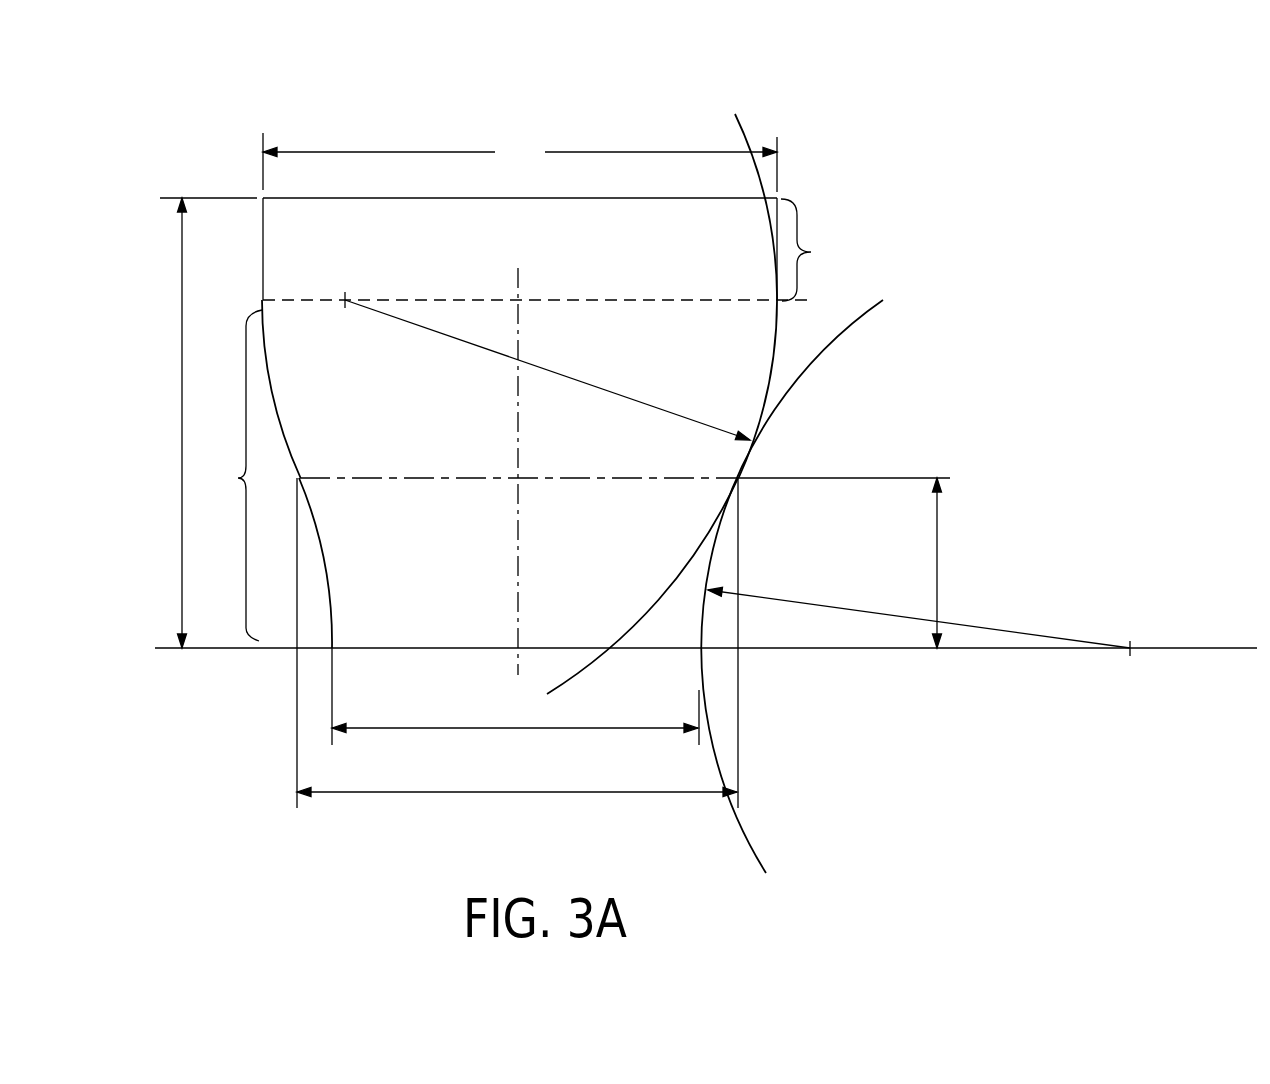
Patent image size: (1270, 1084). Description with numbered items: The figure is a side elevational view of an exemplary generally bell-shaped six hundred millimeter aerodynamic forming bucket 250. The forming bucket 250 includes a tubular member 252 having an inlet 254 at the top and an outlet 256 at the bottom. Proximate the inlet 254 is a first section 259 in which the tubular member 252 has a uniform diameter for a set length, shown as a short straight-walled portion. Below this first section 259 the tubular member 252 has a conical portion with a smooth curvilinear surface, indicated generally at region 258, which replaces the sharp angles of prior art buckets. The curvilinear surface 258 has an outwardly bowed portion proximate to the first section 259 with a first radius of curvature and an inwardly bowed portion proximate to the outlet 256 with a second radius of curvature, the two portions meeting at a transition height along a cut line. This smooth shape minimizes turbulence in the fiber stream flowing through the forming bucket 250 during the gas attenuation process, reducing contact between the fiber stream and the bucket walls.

The forming bucket 250 is at (912, 140).
The tubular member 252 is at (287, 231).
The inlet 254 is at (632, 198).
The outlet 256 is at (650, 652).
The curvilinear surface 258 is at (225, 475).
The first section 259 is at (817, 249).